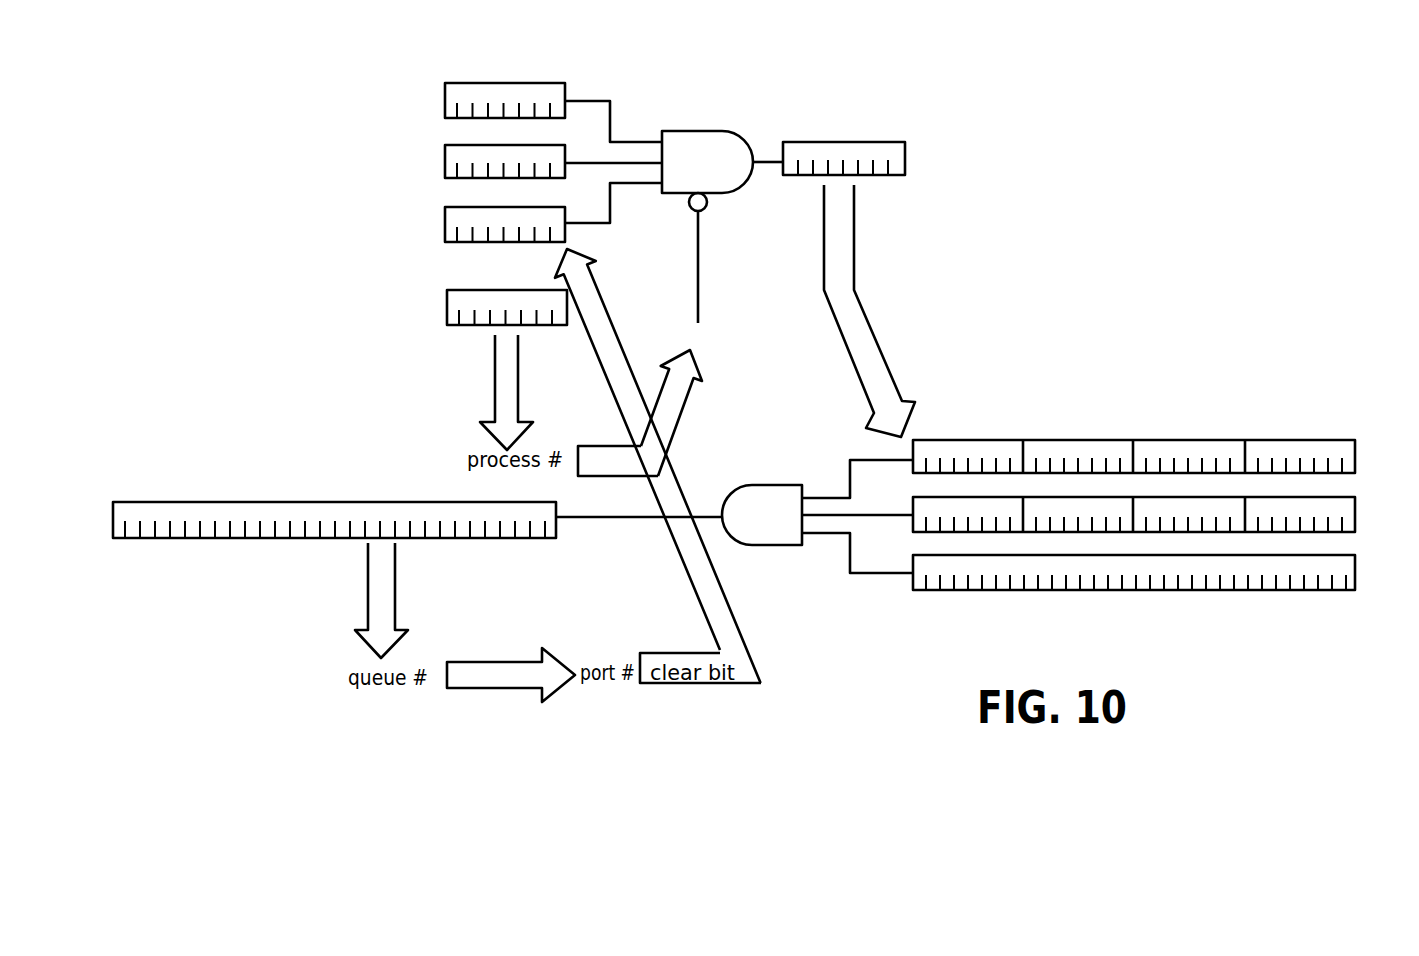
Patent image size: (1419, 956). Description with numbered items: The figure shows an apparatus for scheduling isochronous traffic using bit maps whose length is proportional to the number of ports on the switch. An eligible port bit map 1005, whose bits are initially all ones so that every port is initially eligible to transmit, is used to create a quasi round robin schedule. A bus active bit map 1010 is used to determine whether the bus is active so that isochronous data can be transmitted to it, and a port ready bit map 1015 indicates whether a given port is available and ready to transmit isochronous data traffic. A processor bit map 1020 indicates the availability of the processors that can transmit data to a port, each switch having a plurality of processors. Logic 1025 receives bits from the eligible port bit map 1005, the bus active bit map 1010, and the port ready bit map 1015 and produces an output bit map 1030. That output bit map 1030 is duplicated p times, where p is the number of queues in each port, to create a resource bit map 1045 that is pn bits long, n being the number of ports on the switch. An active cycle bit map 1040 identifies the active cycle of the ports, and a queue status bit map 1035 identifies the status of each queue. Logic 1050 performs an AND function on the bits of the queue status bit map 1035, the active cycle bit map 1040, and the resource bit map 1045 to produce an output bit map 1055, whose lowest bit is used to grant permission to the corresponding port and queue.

The eligible port bit map 1005 is at (300, 236).
The bus active bit map 1010 is at (307, 174).
The port ready bit map 1015 is at (302, 112).
The processor bit map 1020 is at (437, 321).
The logic 1025 is at (722, 212).
The output bit map 1030 is at (868, 276).
The queue status bit map 1035 is at (1163, 572).
The active cycle bit map 1040 is at (1163, 514).
The resource bit map 1045 is at (1163, 454).
The logic 1050 is at (817, 516).
The output bit map 1055 is at (98, 531).